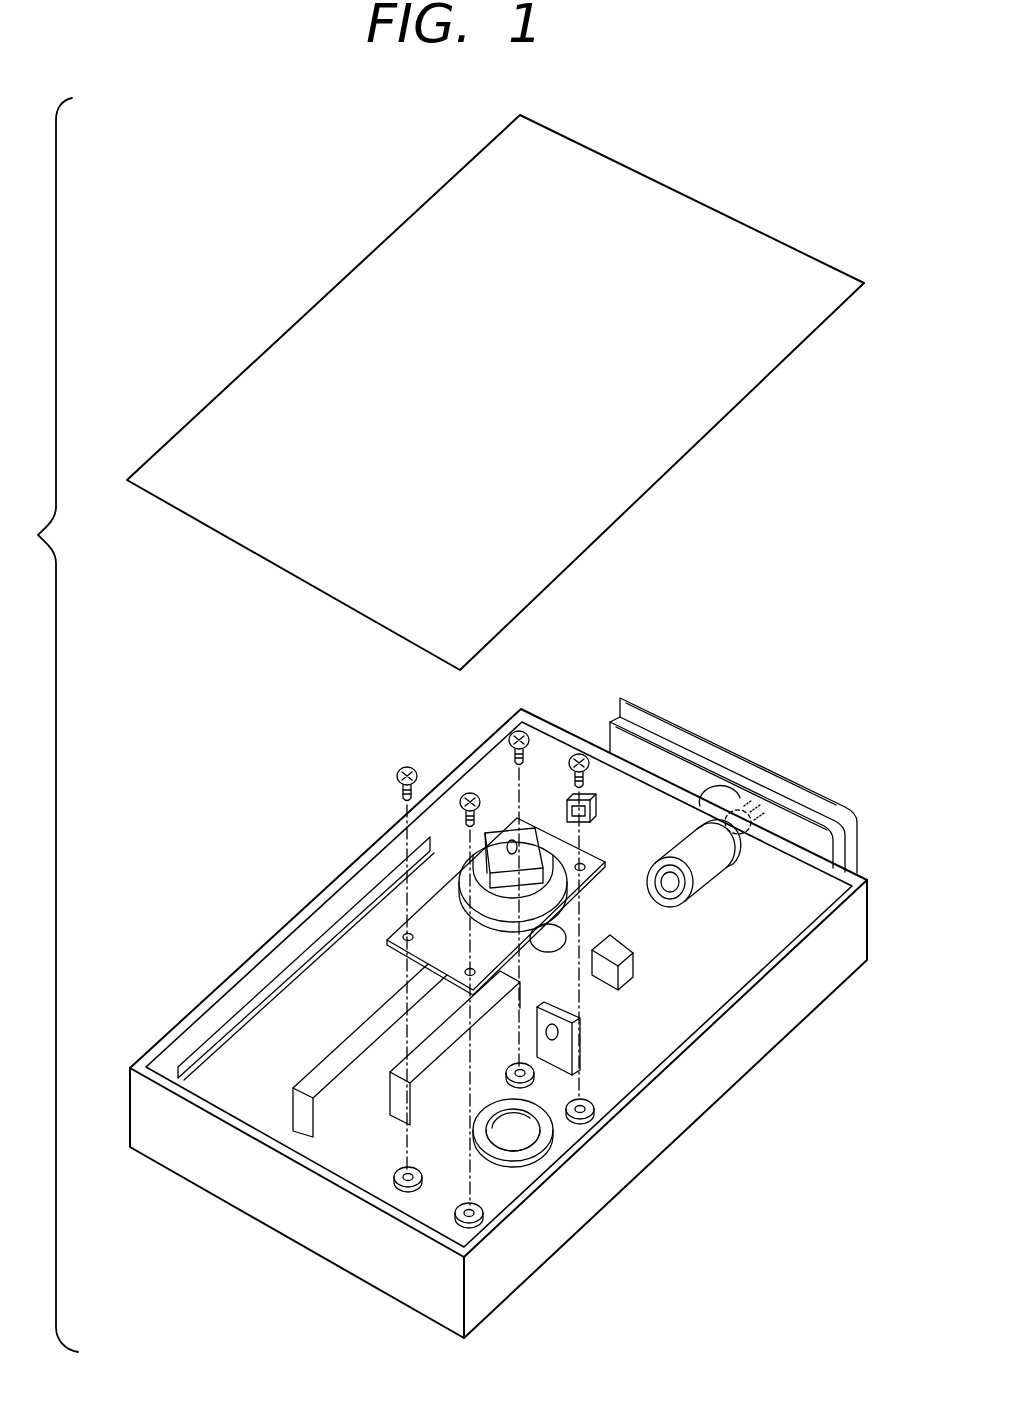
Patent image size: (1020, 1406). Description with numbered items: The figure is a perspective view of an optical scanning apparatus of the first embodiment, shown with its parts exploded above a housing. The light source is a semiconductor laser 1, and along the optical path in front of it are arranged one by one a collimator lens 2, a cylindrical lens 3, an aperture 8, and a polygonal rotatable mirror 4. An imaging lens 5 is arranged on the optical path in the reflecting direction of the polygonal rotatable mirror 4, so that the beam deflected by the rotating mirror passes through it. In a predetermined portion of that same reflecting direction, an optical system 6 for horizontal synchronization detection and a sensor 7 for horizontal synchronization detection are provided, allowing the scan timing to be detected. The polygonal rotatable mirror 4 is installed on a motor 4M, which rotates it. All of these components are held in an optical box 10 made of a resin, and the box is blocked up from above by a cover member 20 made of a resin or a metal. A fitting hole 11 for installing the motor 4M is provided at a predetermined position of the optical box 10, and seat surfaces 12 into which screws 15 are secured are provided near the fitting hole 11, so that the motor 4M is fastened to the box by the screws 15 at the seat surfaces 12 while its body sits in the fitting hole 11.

The semiconductor laser 1 is at (748, 812).
The collimator lens 2 is at (683, 890).
The cylindrical lens 3 is at (633, 968).
The polygonal rotatable mirror 4 is at (508, 818).
The motor 4M is at (522, 826).
The imaging lens 5 is at (397, 1100).
The optical system for horizontal synchronization detection 6 is at (565, 927).
The sensor for horizontal synchronization detection 7 is at (592, 800).
The aperture 8 is at (558, 1034).
The optical box 10 is at (395, 1278).
The fitting hole 11 is at (547, 1139).
The seat surfaces 12 is at (595, 1108).
The screws 15 is at (397, 777).
The cover member 20 is at (743, 383).